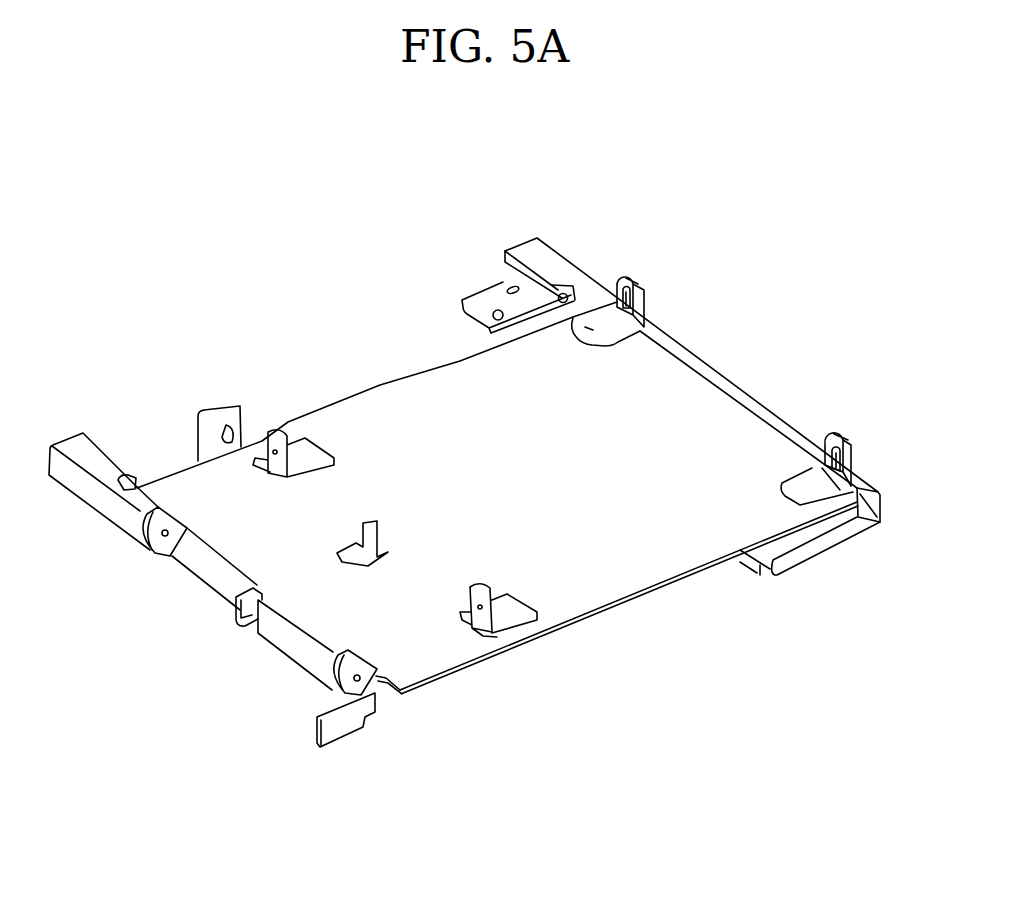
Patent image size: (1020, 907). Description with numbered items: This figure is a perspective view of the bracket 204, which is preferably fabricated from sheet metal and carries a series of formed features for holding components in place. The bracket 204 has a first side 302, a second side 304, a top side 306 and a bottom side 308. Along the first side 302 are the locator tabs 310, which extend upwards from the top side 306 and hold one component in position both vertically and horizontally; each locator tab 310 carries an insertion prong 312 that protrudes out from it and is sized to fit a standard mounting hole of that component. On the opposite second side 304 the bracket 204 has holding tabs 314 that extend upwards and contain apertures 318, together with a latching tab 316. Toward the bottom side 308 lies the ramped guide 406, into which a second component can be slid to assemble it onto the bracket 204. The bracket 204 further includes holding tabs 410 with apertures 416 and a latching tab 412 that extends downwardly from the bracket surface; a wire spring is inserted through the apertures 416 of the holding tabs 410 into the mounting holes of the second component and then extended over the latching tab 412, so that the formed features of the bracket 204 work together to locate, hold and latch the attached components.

The bracket 204 is at (492, 180).
The first side 302 is at (713, 368).
The second side 304 is at (203, 553).
The top side 306 is at (420, 413).
The bottom side 308 is at (688, 574).
The locator tabs 310 is at (623, 273).
The insertion prongs 312 is at (638, 293).
The holding tabs 314 is at (270, 436).
The latching tab 316 is at (363, 535).
The apertures 318 is at (276, 432).
The ramped guide 406 is at (818, 550).
The holding tabs 410 is at (147, 540).
The latching tab 412 is at (237, 623).
The apertures 416 is at (162, 533).